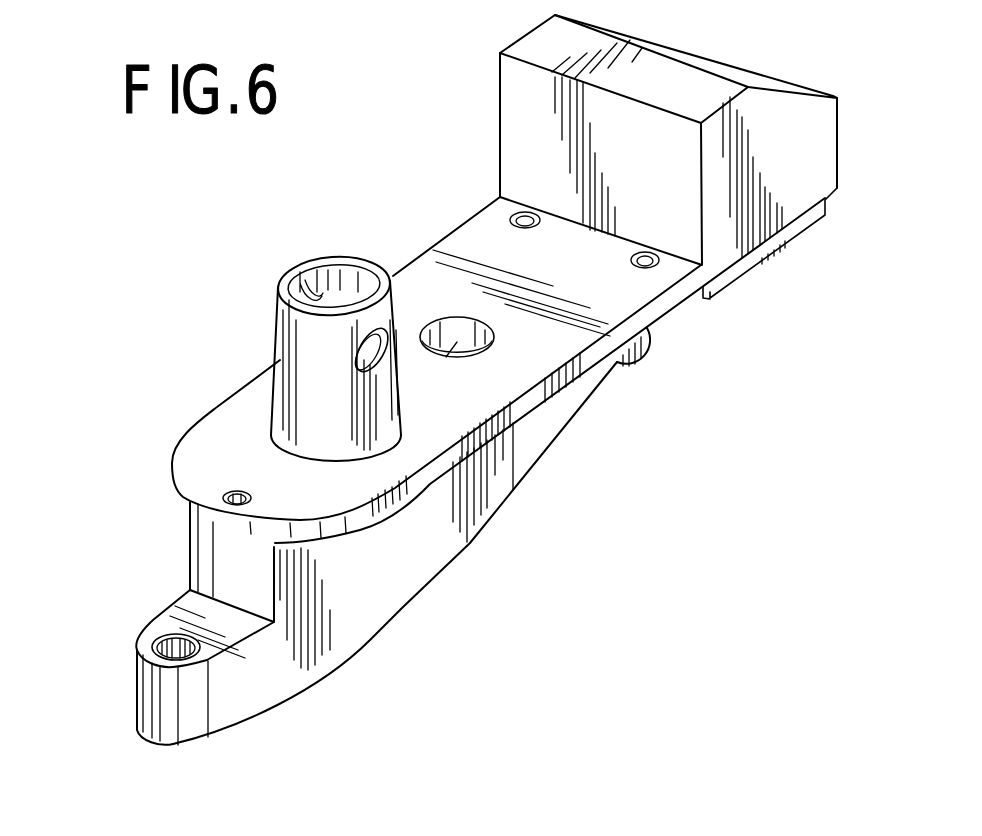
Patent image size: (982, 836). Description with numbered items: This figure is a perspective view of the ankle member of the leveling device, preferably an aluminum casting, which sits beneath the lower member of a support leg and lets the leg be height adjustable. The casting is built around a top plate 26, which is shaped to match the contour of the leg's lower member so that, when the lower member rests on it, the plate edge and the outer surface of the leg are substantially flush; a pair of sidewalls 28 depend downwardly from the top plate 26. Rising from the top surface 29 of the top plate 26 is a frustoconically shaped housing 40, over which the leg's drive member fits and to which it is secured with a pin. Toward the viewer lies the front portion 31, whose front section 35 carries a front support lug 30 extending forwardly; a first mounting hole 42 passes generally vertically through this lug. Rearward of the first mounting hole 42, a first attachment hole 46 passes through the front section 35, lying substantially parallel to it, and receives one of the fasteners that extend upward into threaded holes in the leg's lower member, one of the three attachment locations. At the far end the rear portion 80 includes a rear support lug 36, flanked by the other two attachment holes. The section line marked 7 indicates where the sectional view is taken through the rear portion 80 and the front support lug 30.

The top plate 26 is at (513, 410).
The sidewalls 28 is at (410, 562).
The top surface 29 is at (423, 417).
The front support lug 30 is at (173, 710).
The front portion 31 is at (166, 546).
The front section 35 is at (250, 575).
The rear support lug 36 is at (627, 366).
The housing 40 is at (312, 338).
The first mounting hole 42 is at (178, 645).
The first attachment hole 46 is at (232, 497).
The rear portion 80 is at (775, 50).
The section line 7- 7 is at (715, 12).